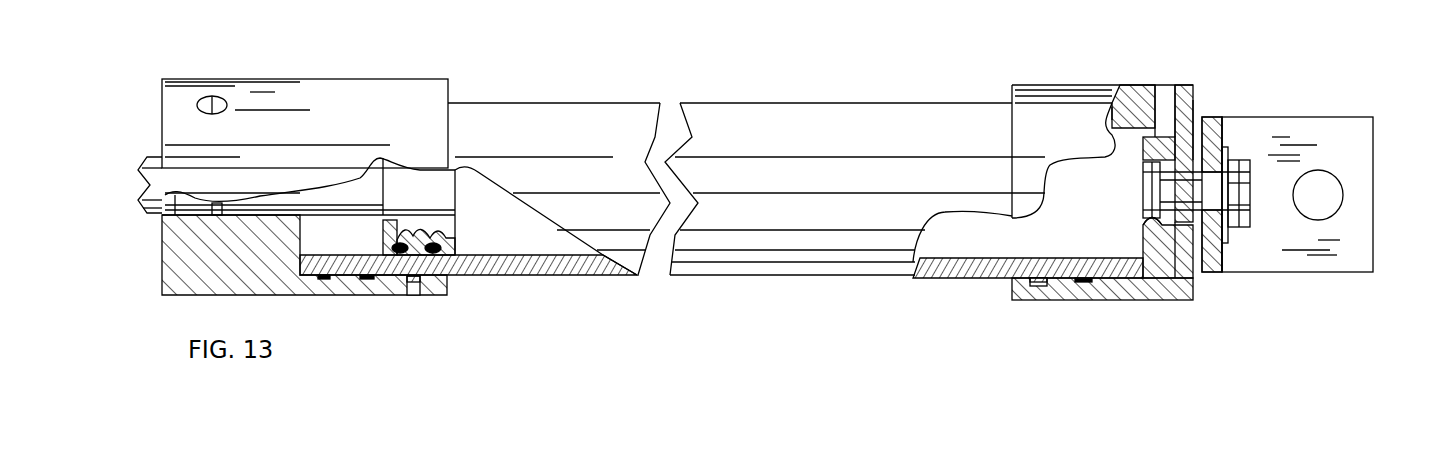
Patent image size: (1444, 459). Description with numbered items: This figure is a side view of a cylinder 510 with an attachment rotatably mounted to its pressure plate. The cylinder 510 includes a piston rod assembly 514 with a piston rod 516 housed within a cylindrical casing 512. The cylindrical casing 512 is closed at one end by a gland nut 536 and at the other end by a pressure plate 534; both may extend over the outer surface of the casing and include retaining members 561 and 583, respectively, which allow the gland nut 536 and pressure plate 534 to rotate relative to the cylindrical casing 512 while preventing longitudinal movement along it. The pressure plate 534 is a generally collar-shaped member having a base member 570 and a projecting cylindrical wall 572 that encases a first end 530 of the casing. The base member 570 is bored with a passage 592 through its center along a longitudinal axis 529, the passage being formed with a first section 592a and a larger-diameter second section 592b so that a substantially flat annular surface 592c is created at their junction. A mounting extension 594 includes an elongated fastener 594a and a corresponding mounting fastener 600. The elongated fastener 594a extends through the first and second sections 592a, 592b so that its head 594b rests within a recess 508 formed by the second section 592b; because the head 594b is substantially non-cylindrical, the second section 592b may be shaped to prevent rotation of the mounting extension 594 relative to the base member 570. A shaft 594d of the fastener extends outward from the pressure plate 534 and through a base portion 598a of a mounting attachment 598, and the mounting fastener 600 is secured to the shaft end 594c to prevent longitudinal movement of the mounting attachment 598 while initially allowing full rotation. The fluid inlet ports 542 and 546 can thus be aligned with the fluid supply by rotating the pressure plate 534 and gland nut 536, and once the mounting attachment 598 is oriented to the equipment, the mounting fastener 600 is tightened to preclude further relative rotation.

The recess 508 is at (1157, 152).
The cylinder 510 is at (670, 60).
The cylindrical casing 512 is at (550, 274).
The piston rod assembly 514 is at (353, 238).
The piston rod 516 is at (143, 157).
The longitudinal axis 529 is at (993, 277).
The first end 530 is at (1133, 108).
The pressure plate 534 is at (1063, 93).
The gland nut 536 is at (333, 92).
The fluid inlet port 542 is at (1165, 95).
The fluid inlet port 546 is at (213, 98).
The retaining member 561 is at (410, 293).
The base member 570 is at (1180, 275).
The projecting cylindrical wall 572 is at (1087, 298).
The retaining member 583 is at (1033, 290).
The passage 592 is at (1170, 223).
The first section 592a is at (1190, 130).
The second section 592b is at (1180, 274).
The annular surface 592c is at (1172, 147).
The mounting extension 594 is at (1272, 214).
The elongated fastener 594a is at (1213, 271).
The head 594b is at (1150, 203).
The shaft end 594c is at (1252, 177).
The shaft 594d is at (1240, 165).
The mounting attachment 598 is at (1357, 128).
The base portion 598a is at (1225, 255).
The mounting fastener 600 is at (1242, 160).